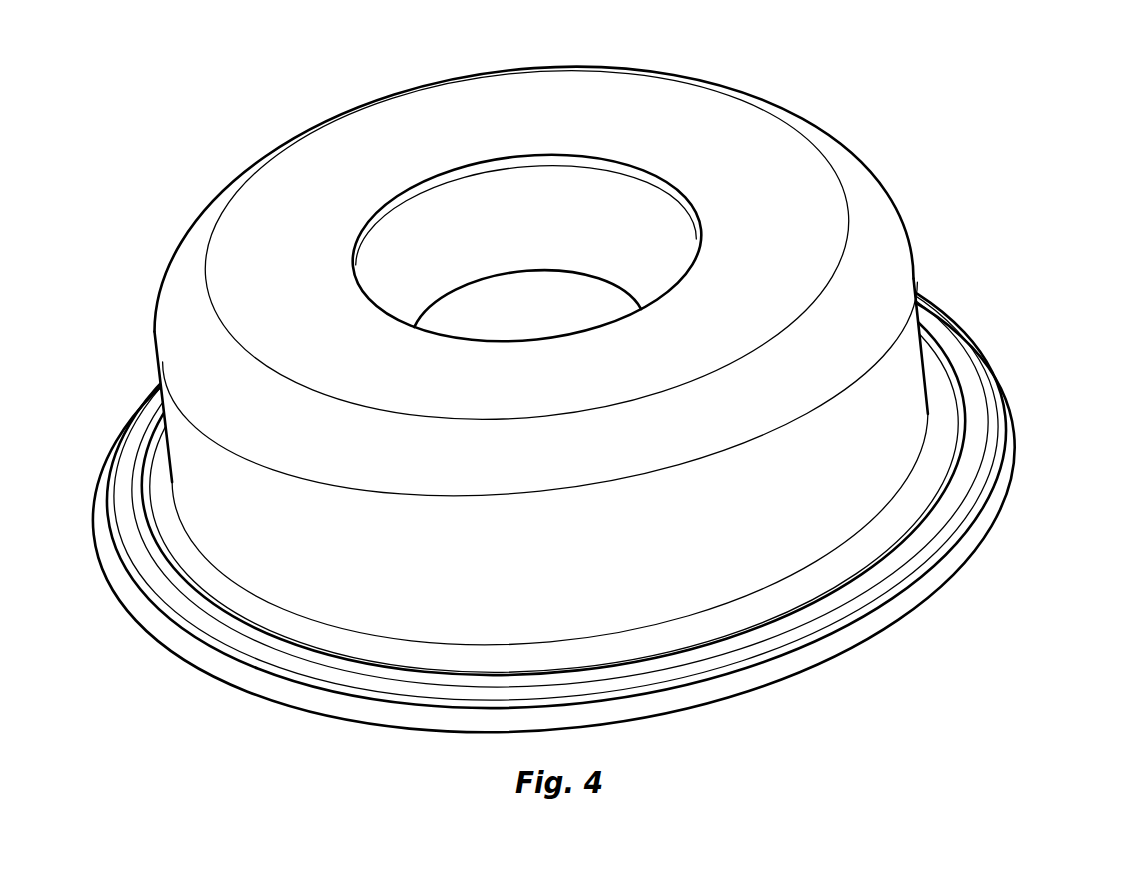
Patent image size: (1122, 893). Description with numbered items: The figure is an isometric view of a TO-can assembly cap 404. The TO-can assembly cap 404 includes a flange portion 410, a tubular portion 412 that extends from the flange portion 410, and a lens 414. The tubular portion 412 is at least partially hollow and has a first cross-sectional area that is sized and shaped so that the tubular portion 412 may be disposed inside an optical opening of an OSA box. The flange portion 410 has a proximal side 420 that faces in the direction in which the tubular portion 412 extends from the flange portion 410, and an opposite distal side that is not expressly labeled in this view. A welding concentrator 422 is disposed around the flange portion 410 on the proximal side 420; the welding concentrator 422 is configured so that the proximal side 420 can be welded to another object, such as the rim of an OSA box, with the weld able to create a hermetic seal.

The TO-can assembly cap 404 is at (582, 402).
The flange portion 410 is at (582, 478).
The tubular portion 412 is at (893, 377).
The lens 414 is at (502, 310).
The proximal side 420 is at (1000, 472).
The welding concentrator 422 is at (978, 406).